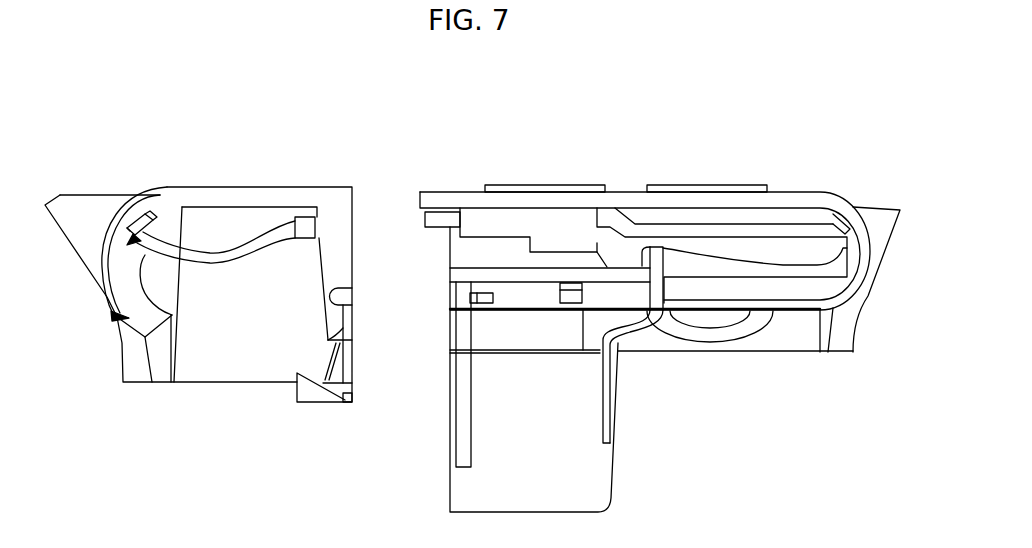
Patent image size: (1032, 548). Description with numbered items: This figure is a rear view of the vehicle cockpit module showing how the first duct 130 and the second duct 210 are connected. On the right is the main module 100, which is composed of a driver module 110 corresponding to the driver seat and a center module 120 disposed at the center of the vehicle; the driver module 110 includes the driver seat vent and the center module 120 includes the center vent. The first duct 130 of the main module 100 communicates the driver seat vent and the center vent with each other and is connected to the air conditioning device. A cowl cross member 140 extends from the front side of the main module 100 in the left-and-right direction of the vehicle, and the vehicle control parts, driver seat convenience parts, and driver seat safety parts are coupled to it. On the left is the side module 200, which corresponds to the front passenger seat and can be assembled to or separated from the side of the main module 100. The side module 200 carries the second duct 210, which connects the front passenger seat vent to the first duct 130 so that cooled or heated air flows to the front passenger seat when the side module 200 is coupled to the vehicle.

The main module 100 is at (813, 180).
The driver module 110 is at (668, 200).
The center module 120 is at (548, 183).
The first duct 130 is at (738, 230).
The cowl cross member 140 is at (693, 262).
The side module 200 is at (252, 170).
The second duct 210 is at (220, 242).